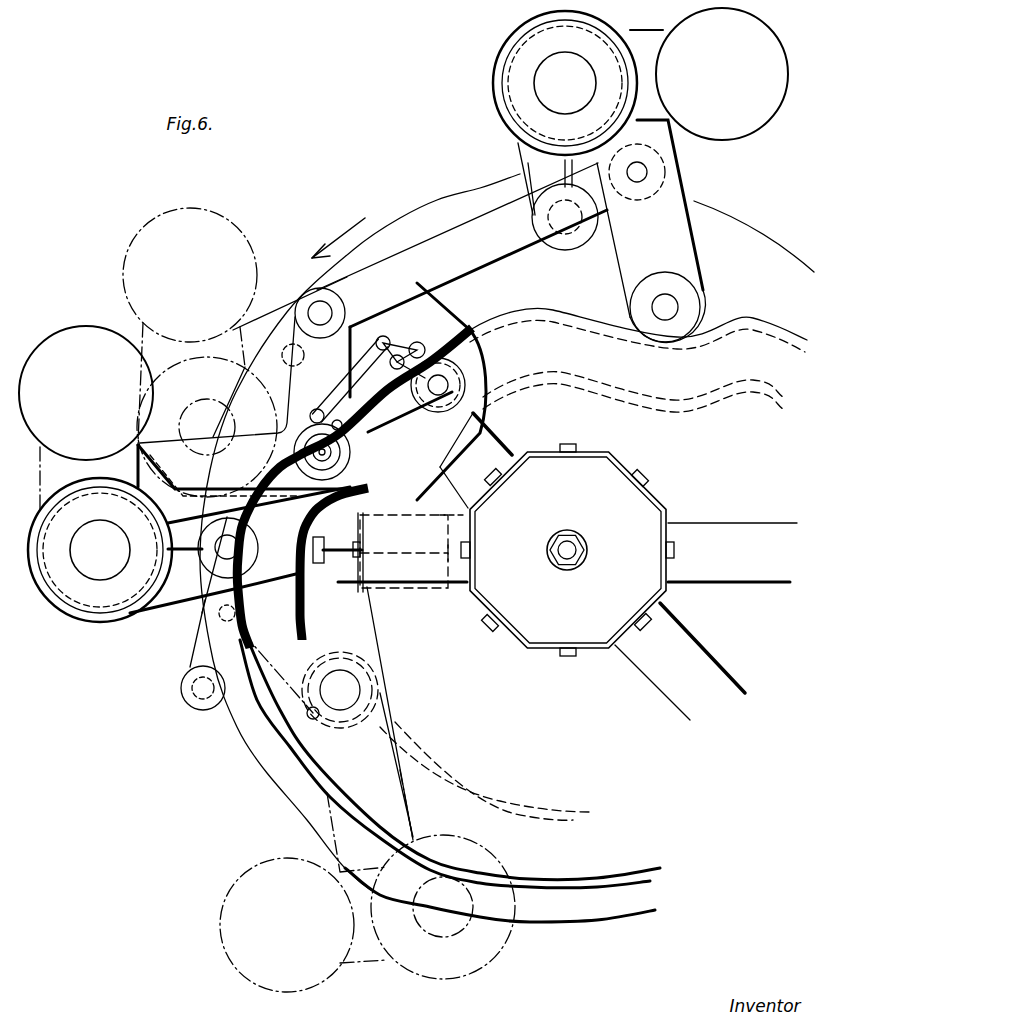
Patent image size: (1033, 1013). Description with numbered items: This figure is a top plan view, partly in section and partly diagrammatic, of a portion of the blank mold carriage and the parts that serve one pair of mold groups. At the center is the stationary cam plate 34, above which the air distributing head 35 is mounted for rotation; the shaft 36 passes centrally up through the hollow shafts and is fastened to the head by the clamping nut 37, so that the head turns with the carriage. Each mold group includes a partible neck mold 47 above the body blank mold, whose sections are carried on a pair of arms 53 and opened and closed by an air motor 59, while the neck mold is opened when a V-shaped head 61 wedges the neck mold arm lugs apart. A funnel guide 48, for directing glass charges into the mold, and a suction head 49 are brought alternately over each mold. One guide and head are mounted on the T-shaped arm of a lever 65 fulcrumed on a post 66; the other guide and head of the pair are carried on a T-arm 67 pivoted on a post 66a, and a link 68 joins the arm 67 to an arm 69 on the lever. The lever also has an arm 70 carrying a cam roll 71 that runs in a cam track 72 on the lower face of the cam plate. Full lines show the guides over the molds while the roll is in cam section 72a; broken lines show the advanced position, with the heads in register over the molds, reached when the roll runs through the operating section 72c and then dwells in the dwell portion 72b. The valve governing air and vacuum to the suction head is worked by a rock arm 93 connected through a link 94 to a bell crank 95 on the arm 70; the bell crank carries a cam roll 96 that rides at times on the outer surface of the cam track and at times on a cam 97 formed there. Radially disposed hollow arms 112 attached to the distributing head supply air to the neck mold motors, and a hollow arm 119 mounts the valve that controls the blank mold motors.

The stationary cam plate 34 is at (748, 320).
The air distributing head 35 is at (590, 470).
The shaft 36 is at (560, 560).
The clamping nut 37 is at (585, 548).
The neck mold 47 is at (72, 615).
The funnel guide 48 is at (503, 112).
The suction head 49 is at (745, 125).
The arms 53 is at (527, 160).
The air motor 59 is at (372, 515).
The V-shaped head 61 is at (290, 566).
The lever 65 is at (170, 432).
The post 66 is at (345, 458).
The post 66a is at (672, 302).
The T-arm 67 is at (680, 212).
The link 68 is at (455, 240).
The arm 69 is at (285, 352).
The arm 70 is at (415, 398).
The cam roll 71 is at (470, 385).
The cam track 72 is at (565, 313).
The cam section 72a is at (505, 392).
The dwell portion 72b is at (358, 660).
The operating section 72c is at (402, 552).
The rock arm 93 is at (375, 408).
The link 94 is at (348, 385).
The bell crank 95 is at (392, 337).
The cam roll 96 is at (422, 345).
The cam 97 is at (274, 468).
The hollow arms 112 is at (455, 575).
The hollow arm 119 is at (505, 437).